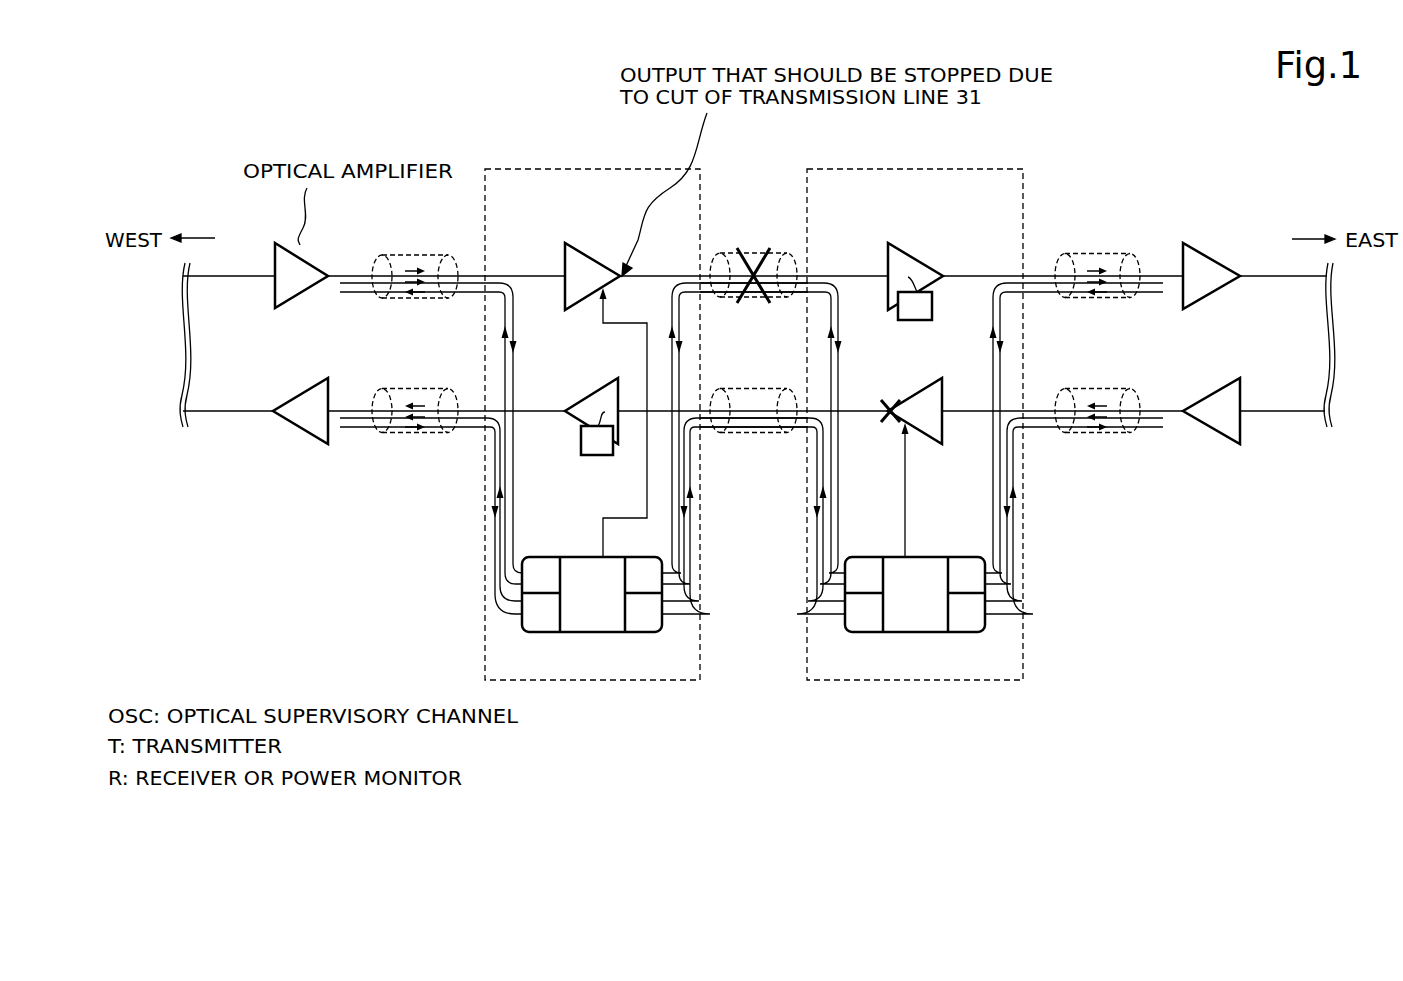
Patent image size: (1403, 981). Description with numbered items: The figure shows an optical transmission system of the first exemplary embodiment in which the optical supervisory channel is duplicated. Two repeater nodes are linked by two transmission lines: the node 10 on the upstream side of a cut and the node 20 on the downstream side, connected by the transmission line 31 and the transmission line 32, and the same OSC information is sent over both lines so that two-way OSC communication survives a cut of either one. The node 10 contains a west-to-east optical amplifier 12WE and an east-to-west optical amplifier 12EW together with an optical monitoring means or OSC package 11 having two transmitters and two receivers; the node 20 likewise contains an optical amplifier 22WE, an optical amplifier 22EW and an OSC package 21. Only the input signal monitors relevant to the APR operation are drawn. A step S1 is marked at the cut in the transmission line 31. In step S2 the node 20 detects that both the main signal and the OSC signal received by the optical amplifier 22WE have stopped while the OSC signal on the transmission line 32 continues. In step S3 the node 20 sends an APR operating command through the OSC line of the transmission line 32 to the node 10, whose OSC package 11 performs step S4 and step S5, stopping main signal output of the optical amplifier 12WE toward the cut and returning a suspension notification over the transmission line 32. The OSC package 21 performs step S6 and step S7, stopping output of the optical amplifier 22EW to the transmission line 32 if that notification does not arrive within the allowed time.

The node 10 is at (540, 169).
The node 20 is at (860, 168).
The optical monitoring means (OSC package) 11 is at (590, 633).
The optical monitoring means (OSC package) 21 is at (917, 633).
The optical amplifier 12WE is at (577, 305).
The optical amplifier 12EW is at (590, 387).
The optical amplifier 22WE is at (913, 257).
The optical amplifier 22EW is at (913, 386).
The transmission line 31 is at (780, 253).
The transmission line 32 is at (777, 385).
The signal S1 (cut detection) S1 is at (753, 315).
The step S2 is at (891, 439).
The step S3 is at (866, 650).
The step S4 is at (646, 650).
The step S5 is at (629, 422).
The step S6 is at (855, 505).
The step S7 is at (890, 490).